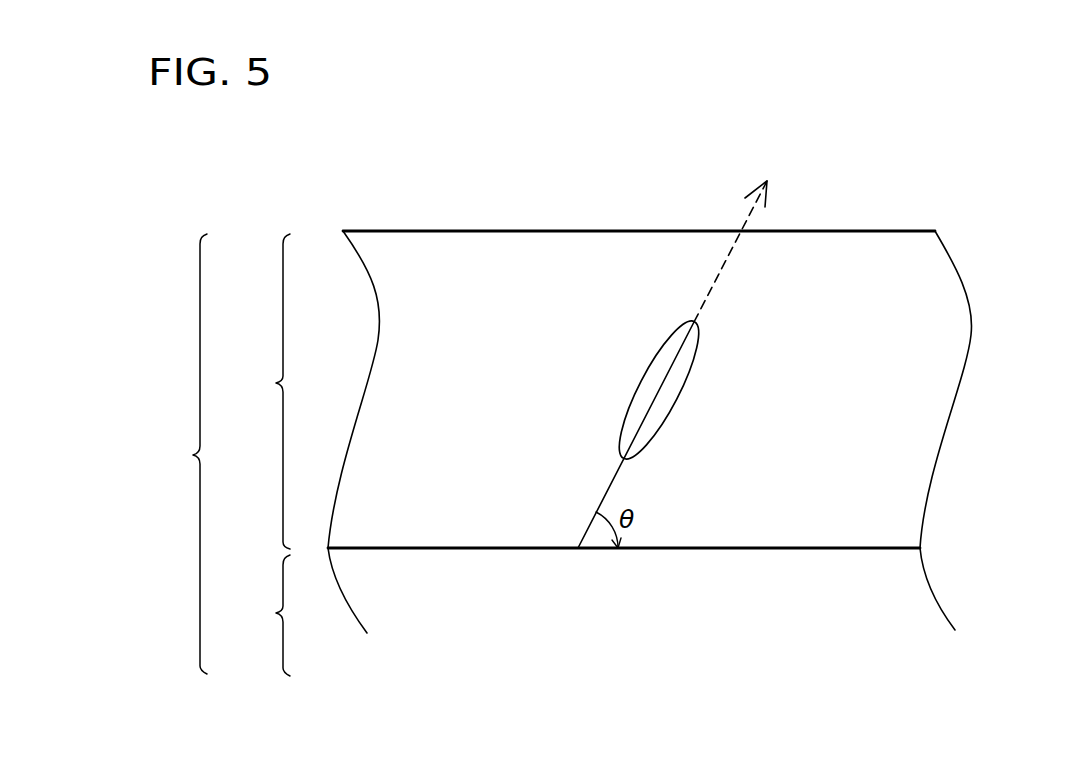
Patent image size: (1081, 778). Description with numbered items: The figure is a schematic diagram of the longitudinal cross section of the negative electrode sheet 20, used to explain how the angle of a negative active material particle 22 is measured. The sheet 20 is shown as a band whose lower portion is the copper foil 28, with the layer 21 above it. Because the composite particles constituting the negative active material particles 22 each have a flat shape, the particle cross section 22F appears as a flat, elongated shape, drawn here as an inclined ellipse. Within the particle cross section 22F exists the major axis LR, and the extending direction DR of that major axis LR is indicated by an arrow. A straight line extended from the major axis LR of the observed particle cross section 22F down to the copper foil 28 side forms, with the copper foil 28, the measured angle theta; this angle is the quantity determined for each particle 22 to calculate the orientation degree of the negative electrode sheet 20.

The negative electrode sheet 20 is at (182, 454).
The base layer 21 is at (607, 390).
The copper foil 28 is at (597, 612).
The negative active material particle 22 is at (650, 368).
The particle cross section 22F is at (679, 390).
The major axis LR is at (681, 343).
The extending direction DR is at (732, 253).